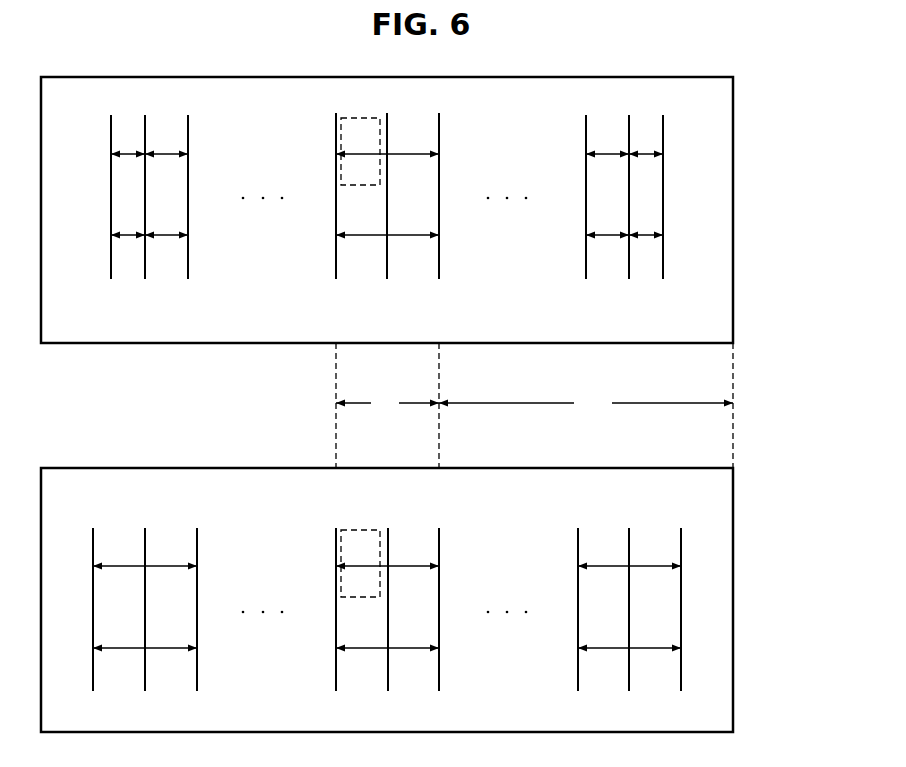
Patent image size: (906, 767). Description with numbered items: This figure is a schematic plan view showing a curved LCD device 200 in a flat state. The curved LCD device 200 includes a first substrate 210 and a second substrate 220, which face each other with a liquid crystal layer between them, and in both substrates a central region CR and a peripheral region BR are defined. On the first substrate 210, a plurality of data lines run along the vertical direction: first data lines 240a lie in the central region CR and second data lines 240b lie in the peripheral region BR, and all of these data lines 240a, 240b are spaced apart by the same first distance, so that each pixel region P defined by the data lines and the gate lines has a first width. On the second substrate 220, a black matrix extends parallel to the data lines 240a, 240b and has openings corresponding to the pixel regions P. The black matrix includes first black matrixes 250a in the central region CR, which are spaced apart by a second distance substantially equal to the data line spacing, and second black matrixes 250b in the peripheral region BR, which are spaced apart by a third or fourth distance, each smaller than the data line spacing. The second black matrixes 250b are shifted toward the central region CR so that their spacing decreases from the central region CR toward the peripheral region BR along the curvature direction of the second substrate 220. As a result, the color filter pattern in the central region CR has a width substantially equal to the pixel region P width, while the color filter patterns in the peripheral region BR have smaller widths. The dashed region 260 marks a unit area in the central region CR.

The curved LCD device 200 is at (86, 417).
The first substrate 210 is at (733, 535).
The second substrate 220 is at (733, 144).
The first data lines 240a is at (336, 513).
The second data lines 240b is at (93, 513).
The first black matrixes 250a is at (336, 292).
The second black matrixes 250b is at (111, 292).
The unit touch area 260 is at (380, 120).
The pixel region P is at (380, 532).
The central region CR is at (387, 403).
The peripheral region BR is at (586, 403).